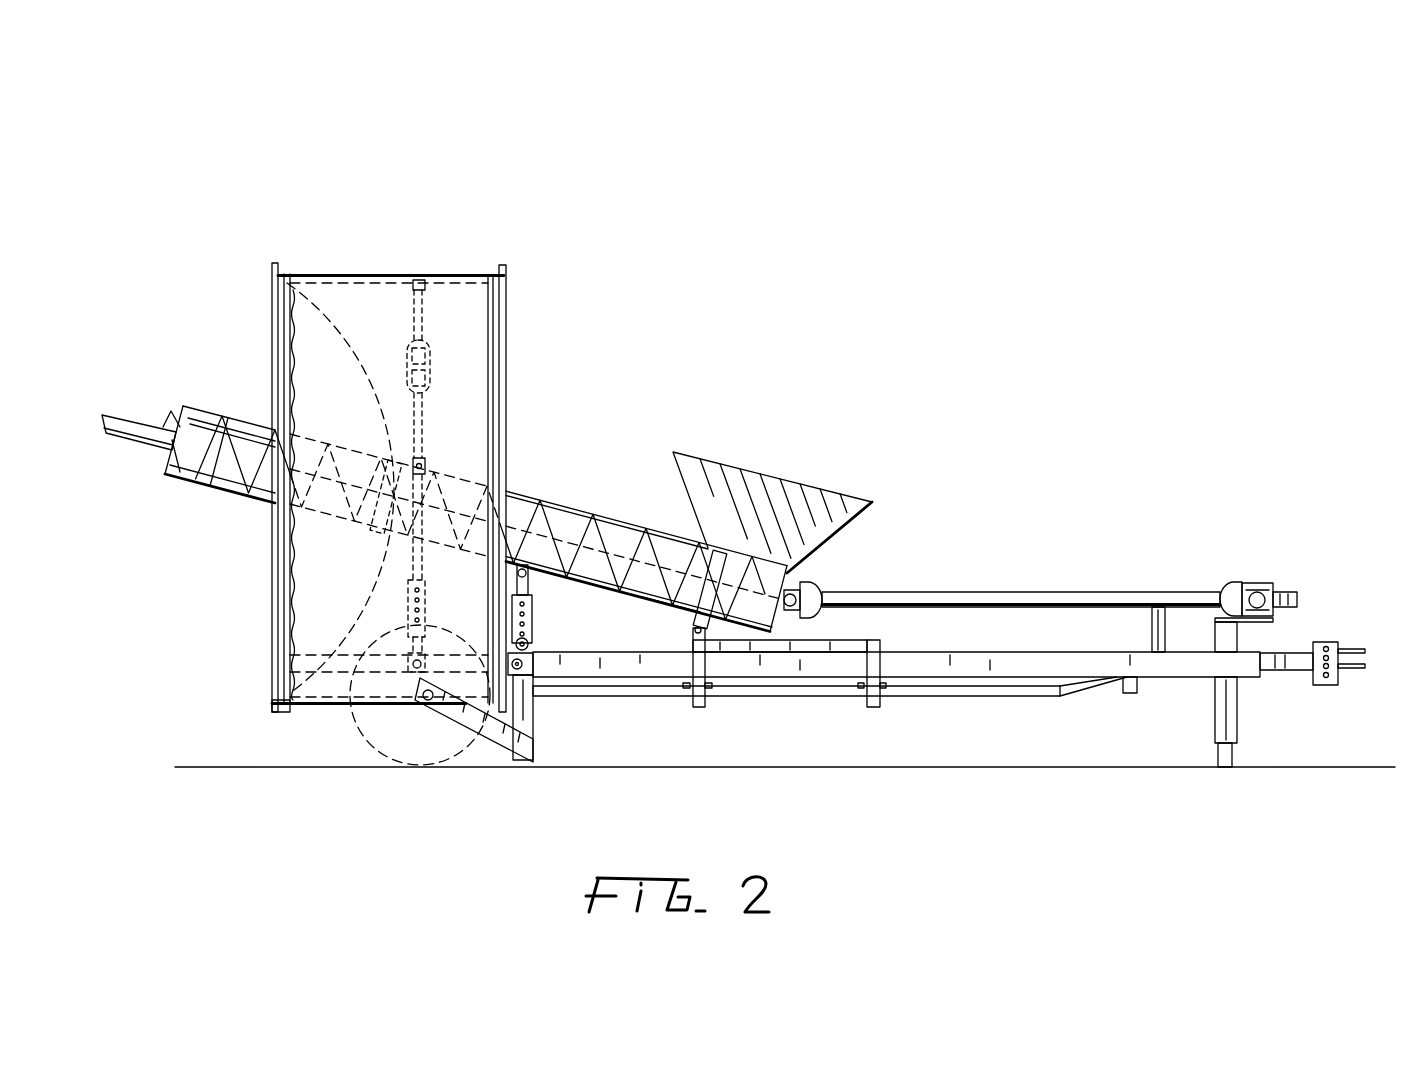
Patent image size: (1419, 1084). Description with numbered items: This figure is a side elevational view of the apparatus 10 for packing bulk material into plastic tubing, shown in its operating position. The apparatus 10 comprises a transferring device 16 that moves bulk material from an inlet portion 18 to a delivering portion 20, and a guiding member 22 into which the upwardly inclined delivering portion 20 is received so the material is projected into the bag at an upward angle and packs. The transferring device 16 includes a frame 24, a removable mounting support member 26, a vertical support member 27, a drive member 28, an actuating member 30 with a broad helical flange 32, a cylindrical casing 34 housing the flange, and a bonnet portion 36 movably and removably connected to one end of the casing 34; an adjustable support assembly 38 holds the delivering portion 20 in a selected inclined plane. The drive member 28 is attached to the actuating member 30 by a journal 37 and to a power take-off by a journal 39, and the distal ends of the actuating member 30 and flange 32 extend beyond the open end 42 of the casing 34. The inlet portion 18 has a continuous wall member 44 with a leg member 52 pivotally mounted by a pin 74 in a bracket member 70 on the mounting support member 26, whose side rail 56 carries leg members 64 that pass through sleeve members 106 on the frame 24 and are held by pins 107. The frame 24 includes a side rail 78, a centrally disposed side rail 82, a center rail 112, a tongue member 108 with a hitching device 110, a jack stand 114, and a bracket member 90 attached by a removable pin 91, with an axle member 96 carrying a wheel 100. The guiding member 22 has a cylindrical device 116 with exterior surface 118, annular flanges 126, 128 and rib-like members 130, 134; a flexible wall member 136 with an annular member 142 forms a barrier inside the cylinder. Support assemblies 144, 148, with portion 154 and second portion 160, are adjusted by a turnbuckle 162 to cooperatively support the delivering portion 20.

The apparatus 10 is at (712, 360).
The transferring device 16 is at (650, 397).
The inlet portion 18 is at (788, 460).
The delivering portion 20 is at (601, 507).
The guiding member 22 is at (515, 207).
The frame 24 is at (615, 702).
The removable mounting support member 26 is at (893, 648).
The vertical support member 27 is at (1160, 628).
The drive member 28 is at (953, 598).
The actuating member 30 is at (112, 410).
The broad helical flange 32 is at (165, 415).
The cylindrical casing 34 is at (560, 488).
The bonnet portion 36 is at (213, 418).
The journal 37 is at (818, 589).
The adjustable support assembly 38 is at (532, 623).
The journal 39 is at (1249, 581).
The open end 42 is at (176, 468).
The continuous wall member 44 is at (820, 512).
The leg member 52 is at (700, 595).
The side rail 56 is at (810, 646).
The leg member 64 is at (707, 688).
The bracket member 70 is at (698, 622).
The pin 74 is at (696, 632).
The side rail 78 is at (1075, 686).
The centrally disposed side rail 82 is at (1133, 680).
The bracket member 90 is at (521, 700).
The removable pin 91 is at (522, 668).
The axle member 96 is at (428, 705).
The wheel 100 is at (385, 720).
The sleeve member 106 is at (697, 666).
The pin 107 is at (687, 690).
The tongue member 108 is at (1290, 660).
The hitching device 110 is at (1333, 641).
The center rail 112 is at (1000, 700).
The screw-type jack stand 114 is at (1238, 708).
The cylindrical device 116 is at (459, 273).
The exterior surface 118 is at (337, 292).
The annular flange 126 is at (506, 266).
The annular flange 128 is at (272, 262).
The rib-like member 130 is at (340, 488).
The rib-like member 134 is at (418, 281).
The wall member 136 is at (310, 341).
The annular member 142 is at (275, 706).
The support assembly 144 is at (428, 600).
The support assembly 148 is at (435, 378).
The portion 154 is at (422, 322).
The second portion 160 is at (420, 440).
The turnbuckle 162 is at (428, 360).